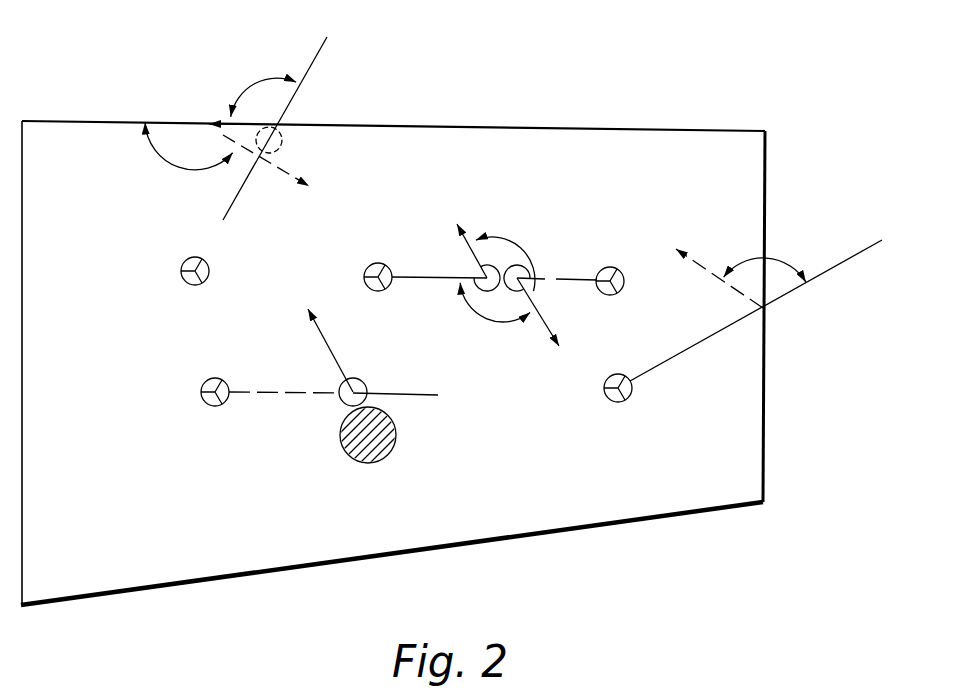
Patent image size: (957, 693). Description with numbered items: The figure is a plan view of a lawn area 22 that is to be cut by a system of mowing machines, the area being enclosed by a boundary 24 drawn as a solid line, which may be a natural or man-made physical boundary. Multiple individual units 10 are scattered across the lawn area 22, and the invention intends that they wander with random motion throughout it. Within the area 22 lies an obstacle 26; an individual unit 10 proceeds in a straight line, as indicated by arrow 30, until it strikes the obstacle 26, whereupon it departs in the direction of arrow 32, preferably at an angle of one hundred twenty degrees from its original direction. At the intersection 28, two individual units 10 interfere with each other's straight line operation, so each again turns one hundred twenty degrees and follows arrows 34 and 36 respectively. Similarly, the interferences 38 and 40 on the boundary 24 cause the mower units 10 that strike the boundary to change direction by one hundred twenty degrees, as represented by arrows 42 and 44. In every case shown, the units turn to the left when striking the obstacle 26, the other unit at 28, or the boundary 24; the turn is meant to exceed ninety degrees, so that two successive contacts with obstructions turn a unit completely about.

The individual mower unit 10 is at (207, 284).
The lawn area 22 is at (110, 206).
The boundary 24 is at (543, 128).
The obstacle 26 is at (394, 447).
The interaction of two individual units 28 is at (502, 262).
The arrow indicating straight line direction 30 is at (305, 388).
The arrow indicating turned direction 32 is at (317, 318).
The arrow indicating turned direction of first interacting unit 34 is at (490, 243).
The arrow indicating turned direction of second interacting unit 36 is at (523, 324).
The interference on boundary 38 is at (274, 130).
The interference on boundary 40 is at (767, 310).
The arrow indicating one hundred twenty degree change in direction 42 is at (781, 262).
The arrow indicating one hundred twenty degree change in direction 44 is at (294, 82).